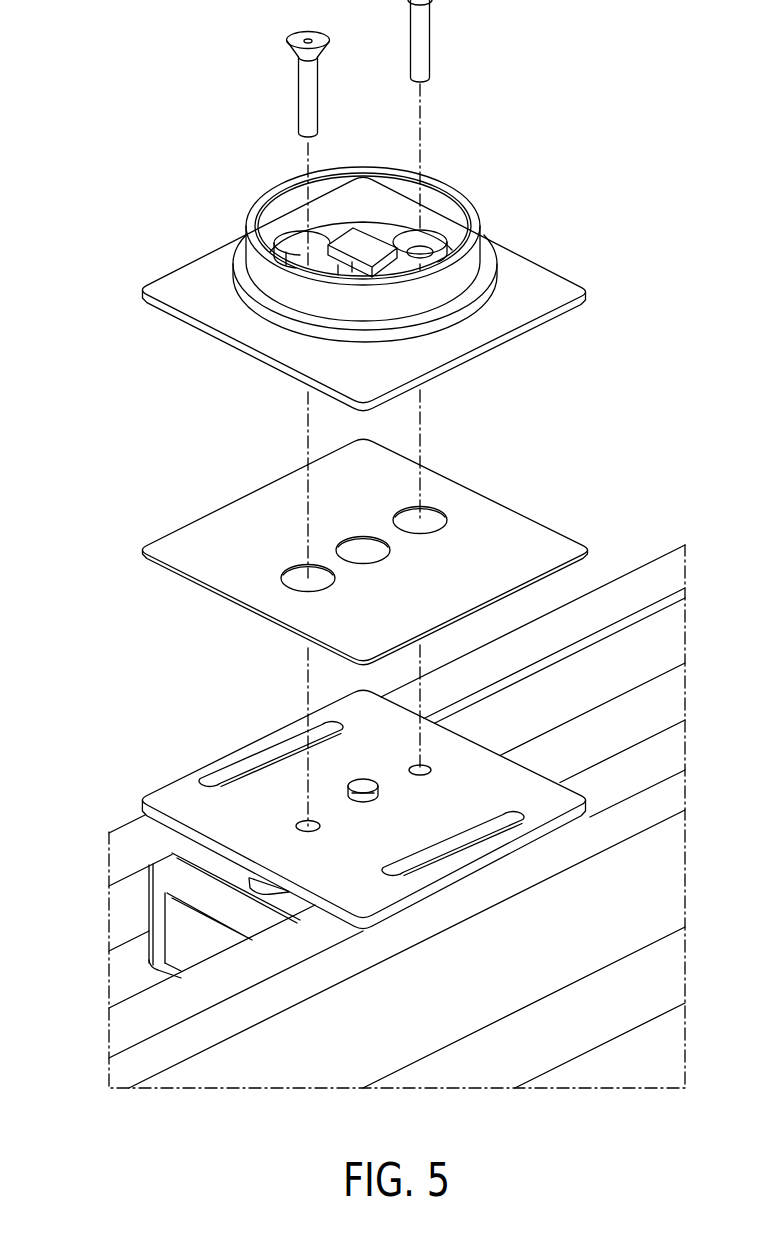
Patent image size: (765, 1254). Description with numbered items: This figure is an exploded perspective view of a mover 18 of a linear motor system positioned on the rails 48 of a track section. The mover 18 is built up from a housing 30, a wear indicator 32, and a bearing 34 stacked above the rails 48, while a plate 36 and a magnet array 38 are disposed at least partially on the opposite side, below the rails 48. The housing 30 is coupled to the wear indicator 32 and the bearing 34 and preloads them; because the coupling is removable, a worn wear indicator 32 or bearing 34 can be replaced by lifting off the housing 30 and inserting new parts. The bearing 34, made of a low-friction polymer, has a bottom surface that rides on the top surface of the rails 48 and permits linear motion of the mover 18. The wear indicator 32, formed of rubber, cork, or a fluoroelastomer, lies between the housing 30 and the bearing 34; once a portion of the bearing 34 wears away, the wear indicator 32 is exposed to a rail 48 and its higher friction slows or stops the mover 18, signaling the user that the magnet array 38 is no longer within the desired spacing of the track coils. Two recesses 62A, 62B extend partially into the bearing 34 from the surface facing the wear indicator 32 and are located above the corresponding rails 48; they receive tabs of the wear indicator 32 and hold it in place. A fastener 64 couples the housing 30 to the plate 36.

The mover 18 is at (86, 220).
The housing 30 is at (533, 256).
The wear indicator 32 is at (247, 607).
The bearing 34 is at (140, 798).
The plate 36 is at (182, 892).
The magnet array 38 is at (177, 972).
The rails 48 is at (578, 648).
The recess 62A is at (252, 762).
The recess 62B is at (435, 850).
The fastener 64 is at (367, 789).